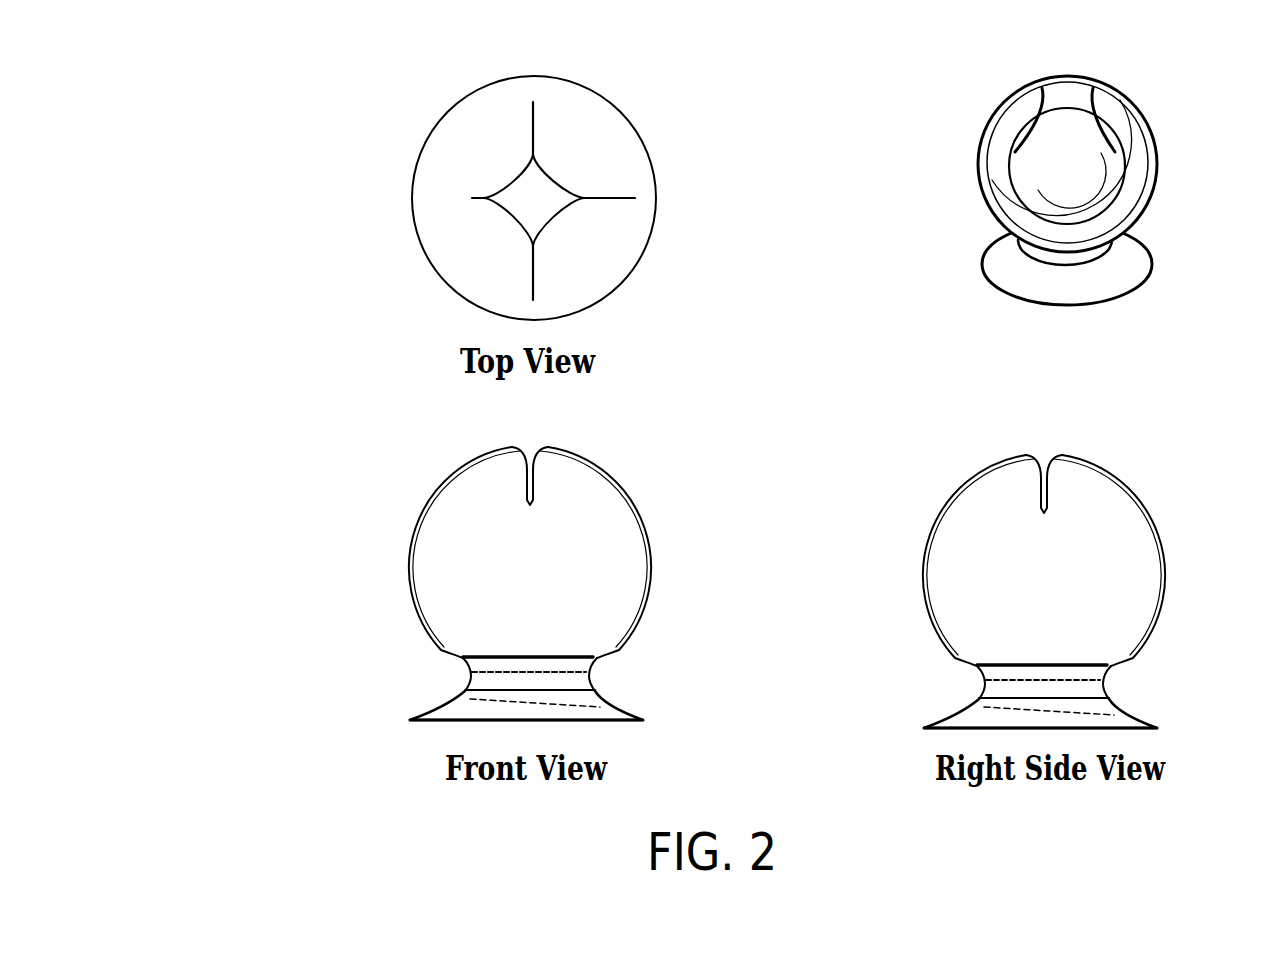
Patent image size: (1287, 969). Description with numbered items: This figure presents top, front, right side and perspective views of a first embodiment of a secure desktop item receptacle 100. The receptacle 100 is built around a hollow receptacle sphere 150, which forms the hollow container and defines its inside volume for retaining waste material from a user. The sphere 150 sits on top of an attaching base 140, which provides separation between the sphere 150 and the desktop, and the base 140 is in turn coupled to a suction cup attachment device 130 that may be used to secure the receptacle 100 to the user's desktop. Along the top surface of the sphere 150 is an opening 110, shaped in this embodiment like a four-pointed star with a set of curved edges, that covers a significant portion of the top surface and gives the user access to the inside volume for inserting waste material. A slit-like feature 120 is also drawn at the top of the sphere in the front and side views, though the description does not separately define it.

The secure desktop item receptacle 100 is at (1123, 132).
The opening 110 is at (528, 205).
The top slit opening 120 is at (515, 487).
The suction cup attachment device 130 is at (528, 708).
The attaching base 140 is at (580, 680).
The hollow receptacle sphere 150 is at (530, 566).